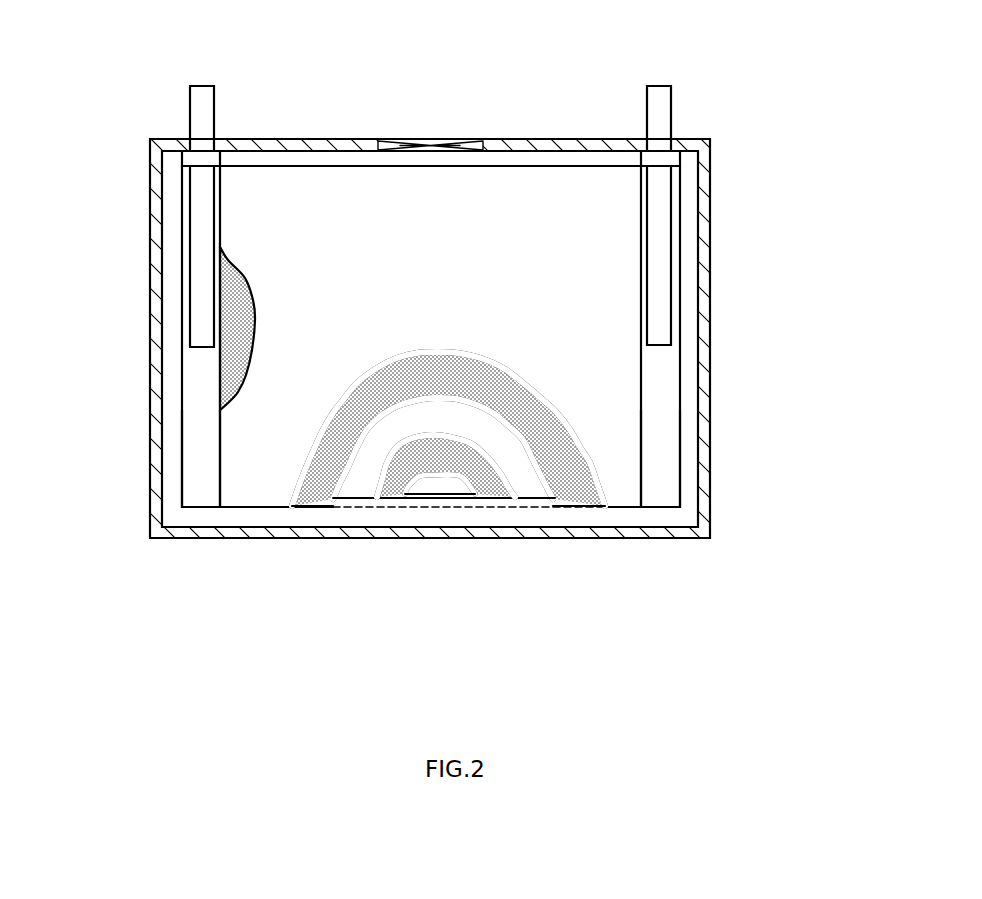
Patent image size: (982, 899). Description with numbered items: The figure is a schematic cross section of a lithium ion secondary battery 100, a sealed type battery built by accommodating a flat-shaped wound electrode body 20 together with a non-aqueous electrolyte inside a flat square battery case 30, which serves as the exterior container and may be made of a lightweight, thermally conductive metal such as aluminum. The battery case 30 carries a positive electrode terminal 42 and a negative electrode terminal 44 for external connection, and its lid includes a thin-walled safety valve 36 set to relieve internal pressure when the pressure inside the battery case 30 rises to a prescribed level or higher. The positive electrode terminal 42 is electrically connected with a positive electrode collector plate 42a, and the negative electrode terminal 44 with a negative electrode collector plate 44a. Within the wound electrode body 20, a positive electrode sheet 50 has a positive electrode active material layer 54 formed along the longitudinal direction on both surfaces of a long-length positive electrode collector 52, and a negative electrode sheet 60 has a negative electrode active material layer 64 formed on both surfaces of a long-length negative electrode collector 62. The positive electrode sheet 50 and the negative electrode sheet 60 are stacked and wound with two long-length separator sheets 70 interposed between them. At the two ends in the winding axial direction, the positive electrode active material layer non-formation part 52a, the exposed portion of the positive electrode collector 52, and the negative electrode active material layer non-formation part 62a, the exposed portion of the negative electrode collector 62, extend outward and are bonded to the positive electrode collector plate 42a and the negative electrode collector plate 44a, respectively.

The lithium ion secondary battery 100 is at (712, 103).
The wound electrode body 20 is at (316, 197).
The battery case 30 is at (711, 250).
The safety valve 36 is at (431, 139).
The positive electrode terminal 42 is at (202, 93).
The positive electrode collector plate 42a is at (203, 233).
The negative electrode terminal 44 is at (659, 93).
The negative electrode collector plate 44a is at (658, 200).
The positive electrode sheet 50 is at (310, 490).
The positive electrode collector 52 is at (181, 403).
The positive electrode active material layer non-formation part 52a is at (197, 480).
The positive electrode active material layer 54 is at (243, 297).
The negative electrode sheet 60 is at (398, 488).
The negative electrode collector 62 is at (680, 362).
The negative electrode active material layer non-formation part 62a is at (665, 405).
The negative electrode active material layer 64 is at (443, 545).
The separator sheet 70 is at (258, 438).